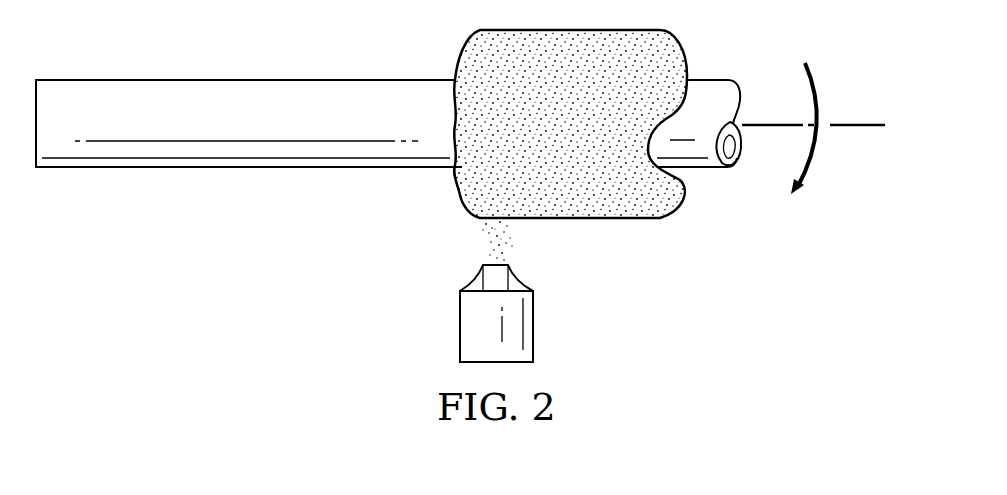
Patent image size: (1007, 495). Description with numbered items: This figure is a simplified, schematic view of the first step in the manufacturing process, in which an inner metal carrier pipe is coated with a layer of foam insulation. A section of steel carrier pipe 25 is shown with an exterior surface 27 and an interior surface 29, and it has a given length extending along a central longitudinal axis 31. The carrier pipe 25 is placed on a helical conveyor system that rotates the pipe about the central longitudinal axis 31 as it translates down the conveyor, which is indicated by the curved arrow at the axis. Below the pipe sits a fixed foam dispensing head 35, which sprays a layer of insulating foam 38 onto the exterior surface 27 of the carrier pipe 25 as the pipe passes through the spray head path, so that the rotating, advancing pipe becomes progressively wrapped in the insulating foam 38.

The steel carrier pipe 25 is at (229, 77).
The exterior surface 27 is at (708, 84).
The interior surface 29 is at (740, 150).
The central longitudinal axis 31 is at (855, 122).
The fixed foam dispensing head 35 is at (468, 327).
The insulating foam 38 is at (572, 218).